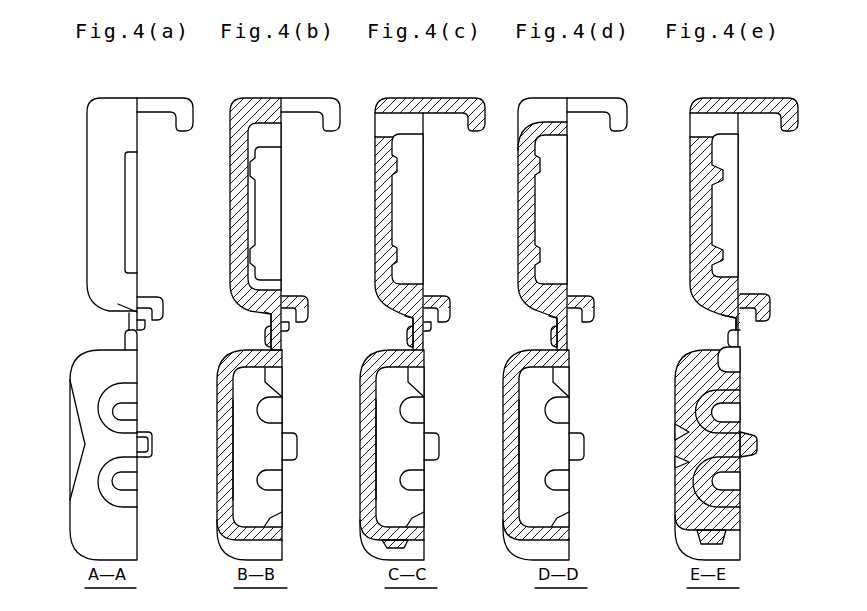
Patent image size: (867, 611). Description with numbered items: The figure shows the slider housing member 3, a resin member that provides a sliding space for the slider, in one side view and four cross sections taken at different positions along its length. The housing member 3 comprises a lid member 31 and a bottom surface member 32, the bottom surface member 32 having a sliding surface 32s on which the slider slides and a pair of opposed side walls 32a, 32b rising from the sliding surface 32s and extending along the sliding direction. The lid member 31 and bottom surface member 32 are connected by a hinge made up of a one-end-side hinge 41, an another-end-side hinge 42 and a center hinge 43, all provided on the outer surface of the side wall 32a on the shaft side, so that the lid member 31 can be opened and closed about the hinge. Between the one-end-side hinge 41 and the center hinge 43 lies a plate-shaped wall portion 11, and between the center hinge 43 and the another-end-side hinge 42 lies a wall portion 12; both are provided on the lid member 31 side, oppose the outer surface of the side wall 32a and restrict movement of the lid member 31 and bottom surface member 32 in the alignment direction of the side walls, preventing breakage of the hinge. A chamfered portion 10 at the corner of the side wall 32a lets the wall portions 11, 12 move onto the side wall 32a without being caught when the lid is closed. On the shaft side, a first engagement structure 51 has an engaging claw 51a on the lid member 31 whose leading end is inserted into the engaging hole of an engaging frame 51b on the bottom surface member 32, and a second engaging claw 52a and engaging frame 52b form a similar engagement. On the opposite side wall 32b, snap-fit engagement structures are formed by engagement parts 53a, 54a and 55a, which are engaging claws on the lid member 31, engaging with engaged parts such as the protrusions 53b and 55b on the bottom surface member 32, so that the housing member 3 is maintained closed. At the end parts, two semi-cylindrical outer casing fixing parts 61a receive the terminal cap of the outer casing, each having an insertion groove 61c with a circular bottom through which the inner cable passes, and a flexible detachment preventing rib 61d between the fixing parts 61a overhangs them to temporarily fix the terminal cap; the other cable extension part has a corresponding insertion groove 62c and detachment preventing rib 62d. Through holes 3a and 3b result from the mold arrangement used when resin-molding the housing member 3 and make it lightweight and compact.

In FIG. 4A, the slider housing member 3 is at (128, 319).
In FIG. 4B, the slider housing member 3 is at (276, 319).
In FIG. 4C, the slider housing member 3 is at (416, 319).
In FIG. 4D, the slider housing member 3 is at (564, 319).
In FIG. 4E, the slider housing member 3 is at (722, 319).
In FIG. 4C, the through hole 3a is at (393, 127).
In FIG. 4E, the through hole 3a is at (707, 127).
In FIG. 4E, the through hole 3b is at (688, 433).
In FIG. 4B, the chamfered portion 10 is at (283, 349).
In FIG. 4A, the wall portion 11 is at (145, 327).
In FIG. 4B, the wall portion 11 is at (287, 324).
In FIG. 4E, the wall portion 11 is at (724, 316).
In FIG. 4C, the wall portion 12 is at (429, 325).
In FIG. 4A, the lid member 31 is at (100, 292).
In FIG. 4A, the bottom surface member 32 is at (123, 450).
In FIG. 4B, the side wall 32a is at (266, 370).
In FIG. 4C, the side wall 32a is at (409, 370).
In FIG. 4D, the side wall 32a is at (554, 370).
In FIG. 4B, the side wall 32b is at (264, 521).
In FIG. 4C, the side wall 32b is at (407, 521).
In FIG. 4D, the side wall 32b is at (552, 521).
In FIG. 4B, the sliding surface 32s is at (237, 476).
In FIG. 4C, the sliding surface 32s is at (380, 476).
In FIG. 4D, the sliding surface 32s is at (524, 476).
In FIG. 4A, the one-end-side hinge 41 is at (134, 325).
In FIG. 4E, the one-end-side hinge 41 is at (734, 323).
In FIG. 4D, the another-end-side hinge 42 is at (558, 323).
In FIG. 4B, the center hinge 43 is at (272, 322).
In FIG. 4C, the center hinge 43 is at (414, 323).
In FIG. 4E, the first engagement structure 51 is at (725, 253).
In FIG. 4A, the engaging claw 51a is at (152, 306).
In FIG. 4E, the engaging claw 51a is at (755, 306).
In FIG. 4A, the engaging frame 51b is at (134, 341).
In FIG. 4E, the engaging frame 51b is at (727, 338).
In FIG. 4B, the engaging claw 52a is at (297, 304).
In FIG. 4C, the engaging claw 52a is at (438, 306).
In FIG. 4D, the engaging claw 52a is at (583, 306).
In FIG. 4B, the engaging frame 52b is at (268, 334).
In FIG. 4C, the engaging frame 52b is at (410, 333).
In FIG. 4D, the engaging frame 52b is at (554, 333).
In FIG. 4A, the engagement part 53a is at (180, 130).
In FIG. 4E, the engagement part 53a is at (782, 129).
In FIG. 4E, the engaged part 53b is at (714, 539).
In FIG. 4D, the engagement part 54a is at (611, 130).
In FIG. 4B, the engagement part 55a is at (325, 130).
In FIG. 4C, the engagement part 55a is at (466, 130).
In FIG. 4C, the engaged part 55b is at (405, 543).
In FIG. 4A, the outer casing fixing part 61a is at (100, 406).
In FIG. 4E, the outer casing fixing part 61a is at (710, 395).
In FIG. 4A, the insertion groove 61c is at (117, 415).
In FIG. 4E, the insertion groove 61c is at (718, 412).
In FIG. 4A, the detachment preventing rib 61d is at (155, 448).
In FIG. 4E, the detachment preventing rib 61d is at (756, 445).
In FIG. 4B, the insertion groove 62c is at (262, 407).
In FIG. 4C, the insertion groove 62c is at (405, 407).
In FIG. 4D, the insertion groove 62c is at (550, 407).
In FIG. 4B, the detachment preventing rib 62d is at (300, 450).
In FIG. 4C, the detachment preventing rib 62d is at (441, 450).
In FIG. 4D, the detachment preventing rib 62d is at (586, 450).